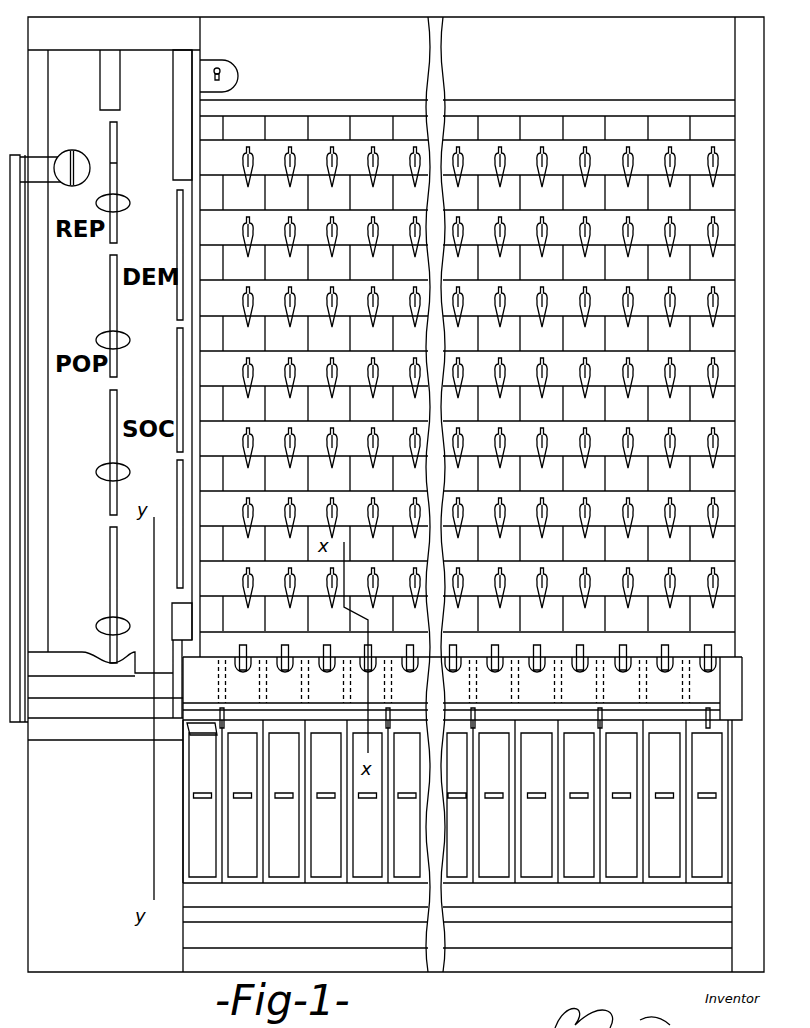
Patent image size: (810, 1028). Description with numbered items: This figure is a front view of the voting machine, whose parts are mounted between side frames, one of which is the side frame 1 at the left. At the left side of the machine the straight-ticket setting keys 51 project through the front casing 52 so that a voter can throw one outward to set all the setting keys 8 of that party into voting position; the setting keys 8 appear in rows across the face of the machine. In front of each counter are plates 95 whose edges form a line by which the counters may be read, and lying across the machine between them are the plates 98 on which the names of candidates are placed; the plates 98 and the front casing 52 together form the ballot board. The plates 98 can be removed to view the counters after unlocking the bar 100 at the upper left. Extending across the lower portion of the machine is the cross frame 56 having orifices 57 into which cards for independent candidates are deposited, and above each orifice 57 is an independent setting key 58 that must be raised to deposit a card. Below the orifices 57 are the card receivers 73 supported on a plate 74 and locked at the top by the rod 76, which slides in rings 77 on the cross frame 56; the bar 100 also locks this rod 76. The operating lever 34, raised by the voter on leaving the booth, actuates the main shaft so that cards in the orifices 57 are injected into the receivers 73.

The side frame 1 is at (396, 494).
The operating lever 34 is at (13, 456).
The bar 100 is at (202, 107).
The orifice 57 is at (107, 128).
The straight-ticket setting key 51 is at (177, 222).
The front casing 52 is at (107, 400).
The plate 98 is at (467, 366).
The plate 95 is at (456, 373).
The setting key 8 is at (410, 302).
The independent setting key 58 is at (281, 657).
The cross frame 56 is at (467, 681).
The rod 76 is at (198, 720).
The ring 77 is at (395, 718).
The card receiver 73 is at (457, 801).
The plate 74 is at (457, 927).